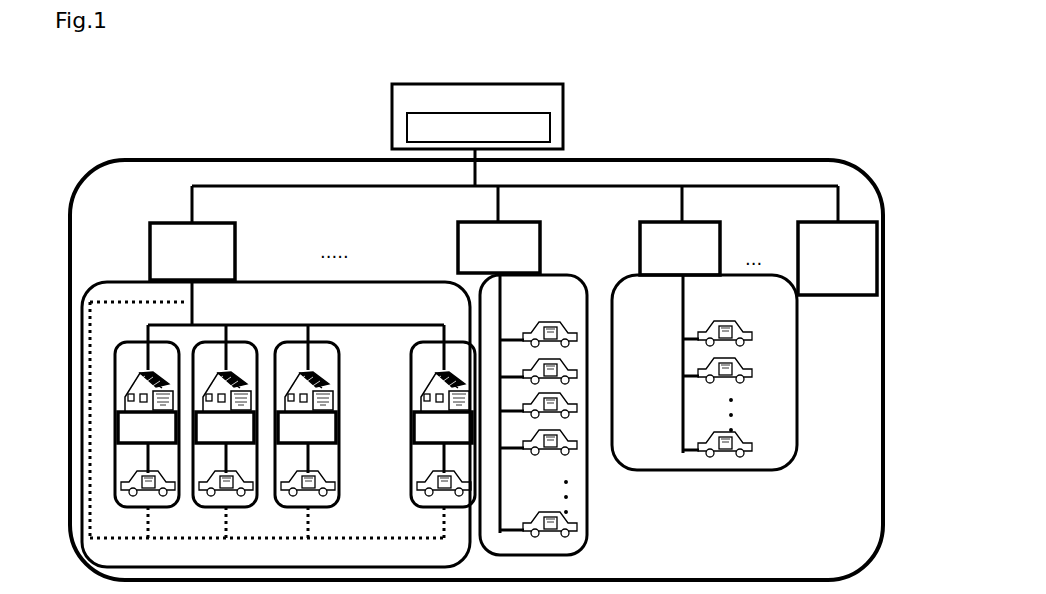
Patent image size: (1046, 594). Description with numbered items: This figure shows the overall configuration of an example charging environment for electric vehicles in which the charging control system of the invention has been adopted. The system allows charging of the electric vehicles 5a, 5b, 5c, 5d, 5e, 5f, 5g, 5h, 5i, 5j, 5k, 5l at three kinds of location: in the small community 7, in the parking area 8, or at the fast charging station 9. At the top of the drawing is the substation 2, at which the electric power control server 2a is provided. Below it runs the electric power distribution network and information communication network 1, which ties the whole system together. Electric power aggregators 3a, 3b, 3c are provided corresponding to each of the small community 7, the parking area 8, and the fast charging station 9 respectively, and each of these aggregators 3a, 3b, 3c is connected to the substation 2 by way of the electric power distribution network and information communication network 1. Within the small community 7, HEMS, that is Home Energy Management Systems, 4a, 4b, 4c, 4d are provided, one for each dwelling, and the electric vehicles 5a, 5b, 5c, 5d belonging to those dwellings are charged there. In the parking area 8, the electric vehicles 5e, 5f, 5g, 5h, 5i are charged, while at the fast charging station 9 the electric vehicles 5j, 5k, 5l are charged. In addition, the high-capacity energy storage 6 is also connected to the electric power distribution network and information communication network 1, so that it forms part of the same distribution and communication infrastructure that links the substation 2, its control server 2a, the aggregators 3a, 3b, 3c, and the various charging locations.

The electric power distribution network and information communication network 1 is at (735, 185).
The substation 2 is at (392, 97).
The electric power control server 2a is at (550, 118).
The electric power aggregator 3a is at (165, 228).
The electric power aggregator 3b is at (470, 238).
The electric power aggregator 3c is at (650, 232).
The HEMS (Home Energy Management System) 4a is at (126, 400).
The HEMS (Home Energy Management System) 4b is at (210, 400).
The HEMS (Home Energy Management System) 4c is at (292, 400).
The HEMS (Home Energy Management System) 4d is at (422, 405).
The electric vehicle 5a is at (162, 496).
The electric vehicle 5b is at (240, 496).
The electric vehicle 5c is at (322, 496).
The electric vehicle 5d is at (430, 496).
The electric vehicle 5e is at (565, 330).
The electric vehicle 5f is at (566, 367).
The electric vehicle 5g is at (578, 416).
The electric vehicle 5h is at (578, 453).
The electric vehicle 5i is at (585, 530).
The electric vehicle 5j is at (753, 343).
The electric vehicle 5k is at (753, 380).
The electric vehicle 5l is at (735, 456).
The high-capacity energy storage 6 is at (847, 223).
The small community 7 is at (244, 290).
The parking area 8 is at (494, 300).
The fast charging station 9 is at (785, 353).